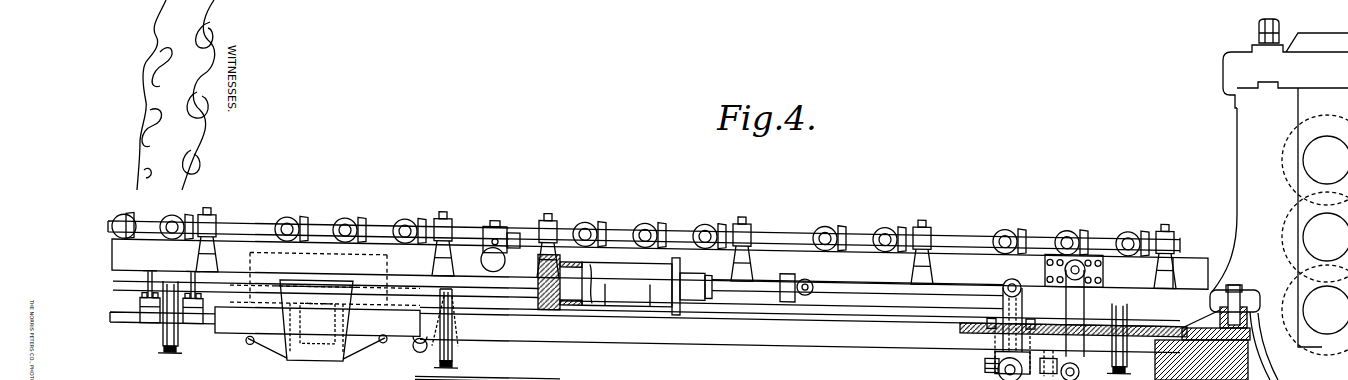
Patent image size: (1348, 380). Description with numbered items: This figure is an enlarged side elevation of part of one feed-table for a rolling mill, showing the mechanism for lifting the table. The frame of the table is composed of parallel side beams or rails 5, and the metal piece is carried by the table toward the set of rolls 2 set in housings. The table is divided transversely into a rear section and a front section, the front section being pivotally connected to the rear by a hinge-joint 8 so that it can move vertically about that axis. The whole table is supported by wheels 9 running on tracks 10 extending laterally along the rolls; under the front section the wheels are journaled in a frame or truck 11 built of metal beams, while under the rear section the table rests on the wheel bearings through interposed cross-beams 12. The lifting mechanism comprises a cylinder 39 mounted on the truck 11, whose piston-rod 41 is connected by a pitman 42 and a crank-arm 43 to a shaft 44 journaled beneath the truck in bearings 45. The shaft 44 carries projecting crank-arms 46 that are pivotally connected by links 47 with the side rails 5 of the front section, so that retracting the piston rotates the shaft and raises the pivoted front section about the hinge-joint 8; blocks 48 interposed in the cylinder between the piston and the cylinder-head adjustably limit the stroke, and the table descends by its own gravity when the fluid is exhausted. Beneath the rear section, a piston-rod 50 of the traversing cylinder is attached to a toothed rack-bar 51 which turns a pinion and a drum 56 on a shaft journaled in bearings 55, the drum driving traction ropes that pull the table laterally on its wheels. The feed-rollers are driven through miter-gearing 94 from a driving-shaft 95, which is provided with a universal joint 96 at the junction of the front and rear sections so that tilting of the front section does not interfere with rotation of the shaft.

The set of rolls 2 is at (1280, 199).
The side beams or rails 5 is at (660, 279).
The hinge-joint 8 is at (493, 259).
The wheels 9 is at (179, 336).
The tracks 10 is at (169, 353).
The frame or truck 11 is at (801, 343).
The cross-beams 12 is at (147, 292).
The cylinder 39 is at (647, 285).
The piston-rod 41 is at (760, 269).
The pitman 42 is at (898, 284).
The crank-arm 43 is at (1024, 286).
The shaft 44 is at (998, 358).
The bearings 45 is at (984, 349).
The crank-arms 46 is at (1046, 341).
The links 47 is at (1085, 287).
The blocks 48 is at (537, 279).
The piston-rod 50 is at (129, 322).
The toothed rack-bar 51 is at (321, 328).
The bearings 55 is at (315, 358).
The drum 56 is at (265, 290).
The miter-gearing 94 is at (290, 215).
The driving-shaft 95 is at (241, 221).
The universal joint 96 is at (497, 213).